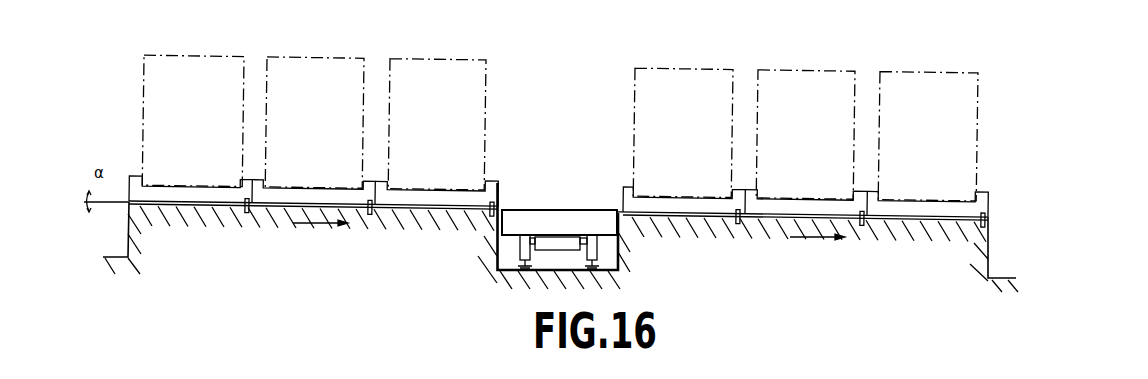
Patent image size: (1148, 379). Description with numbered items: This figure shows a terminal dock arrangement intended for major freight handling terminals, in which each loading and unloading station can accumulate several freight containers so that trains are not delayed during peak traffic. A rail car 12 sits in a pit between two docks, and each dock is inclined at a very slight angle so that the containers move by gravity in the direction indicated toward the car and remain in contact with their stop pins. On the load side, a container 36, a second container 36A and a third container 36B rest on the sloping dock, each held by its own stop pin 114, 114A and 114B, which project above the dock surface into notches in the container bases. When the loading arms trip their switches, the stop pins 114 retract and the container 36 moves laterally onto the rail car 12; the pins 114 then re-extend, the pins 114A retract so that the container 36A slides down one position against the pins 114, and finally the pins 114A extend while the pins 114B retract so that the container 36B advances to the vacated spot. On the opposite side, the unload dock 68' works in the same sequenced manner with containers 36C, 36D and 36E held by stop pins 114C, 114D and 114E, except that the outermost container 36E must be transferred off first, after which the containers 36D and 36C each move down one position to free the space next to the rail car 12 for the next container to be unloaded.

The rail car 12 is at (582, 228).
The freight container 36 is at (473, 195).
The container 36A is at (333, 188).
The container 36B is at (181, 186).
The container 36C is at (643, 198).
The container 36D is at (770, 198).
The container 36E is at (950, 207).
The stop pin 114 is at (496, 207).
The stop pin 114A is at (374, 205).
The stop pin 114B is at (249, 205).
The stop pin 114C is at (736, 210).
The stop pin 114D is at (862, 213).
The stop pin 114E is at (981, 223).
The unload dock 68' is at (569, 245).